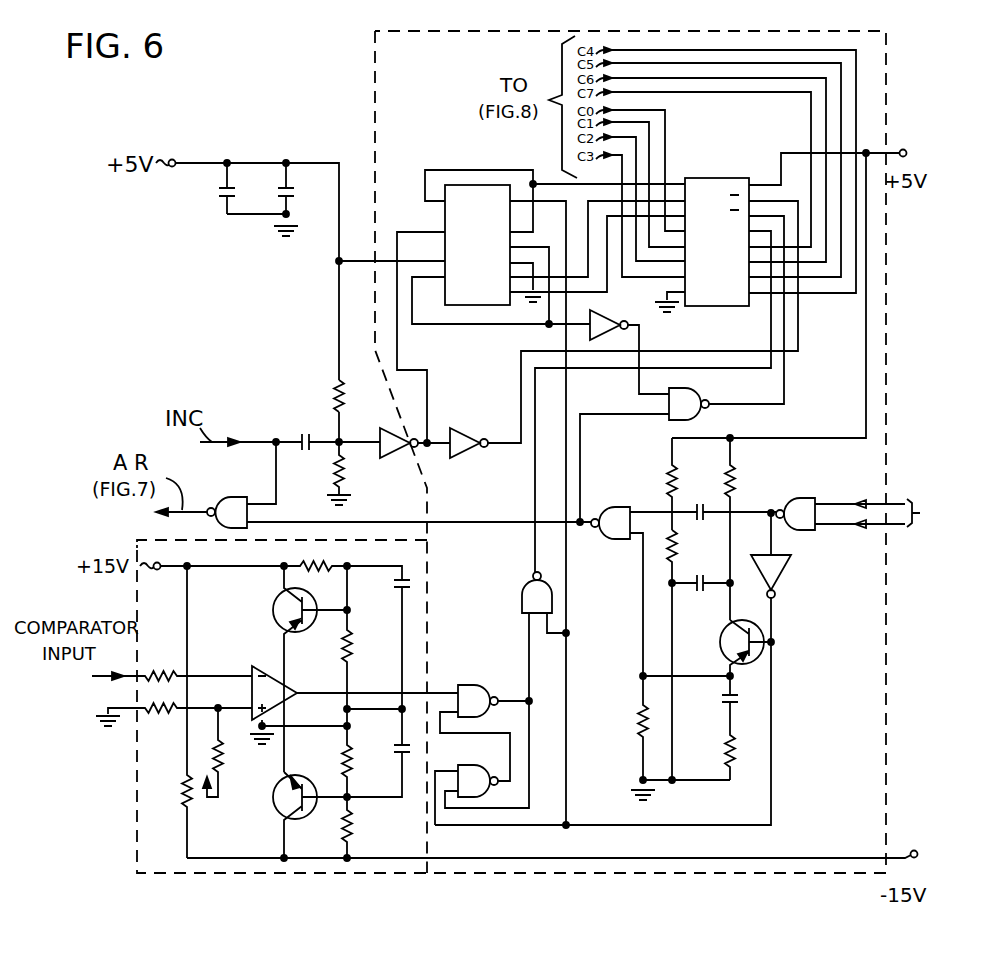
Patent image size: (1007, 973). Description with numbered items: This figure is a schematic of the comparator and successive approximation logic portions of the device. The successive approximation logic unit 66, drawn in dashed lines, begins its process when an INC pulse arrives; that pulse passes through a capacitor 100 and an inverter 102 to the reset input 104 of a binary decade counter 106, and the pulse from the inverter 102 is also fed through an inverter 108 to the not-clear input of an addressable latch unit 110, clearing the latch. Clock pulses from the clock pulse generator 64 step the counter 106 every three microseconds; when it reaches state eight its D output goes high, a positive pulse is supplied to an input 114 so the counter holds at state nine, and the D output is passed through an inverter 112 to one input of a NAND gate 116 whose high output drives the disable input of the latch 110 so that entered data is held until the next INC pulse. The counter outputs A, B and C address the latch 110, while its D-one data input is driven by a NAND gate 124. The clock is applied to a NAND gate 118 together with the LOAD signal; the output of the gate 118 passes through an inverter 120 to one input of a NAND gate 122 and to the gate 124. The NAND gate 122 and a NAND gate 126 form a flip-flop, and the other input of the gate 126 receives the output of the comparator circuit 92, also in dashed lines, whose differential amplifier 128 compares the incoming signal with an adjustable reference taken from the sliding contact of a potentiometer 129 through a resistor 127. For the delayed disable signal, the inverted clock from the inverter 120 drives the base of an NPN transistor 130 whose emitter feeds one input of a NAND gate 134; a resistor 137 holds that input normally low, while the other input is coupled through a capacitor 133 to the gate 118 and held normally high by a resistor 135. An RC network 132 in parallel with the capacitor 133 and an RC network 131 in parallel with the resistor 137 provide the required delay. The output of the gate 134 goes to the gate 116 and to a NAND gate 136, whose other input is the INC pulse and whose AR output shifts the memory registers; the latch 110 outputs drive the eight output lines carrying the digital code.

The successive approximation logic unit 66 is at (847, 31).
The capacitor 100 is at (303, 440).
The inverter 102 is at (394, 458).
The reset input 104 is at (442, 222).
The decade counter 106 is at (478, 306).
The inverter 108 is at (466, 458).
The addressable latch unit 110 is at (735, 306).
The inverter 112 is at (602, 336).
The input 114 is at (440, 290).
The NAND gate 116 is at (700, 390).
The NAND gate 118 is at (818, 480).
The inverter 120 is at (784, 572).
The NAND gate 122 is at (478, 798).
The NAND gate 124 is at (525, 590).
The NAND gate 126 is at (474, 685).
The resistor 127 is at (223, 758).
The differential amplifier 128 is at (257, 666).
The potentiometer 129 is at (190, 800).
The NPN transistor 130 is at (720, 642).
The RC network 131 is at (736, 726).
The RC network 132 is at (665, 556).
The capacitor 133 is at (697, 506).
The NAND gate 134 is at (620, 507).
The resistor 135 is at (662, 480).
The NAND gate 136 is at (224, 497).
The resistor 137 is at (645, 735).
The clock pulse generator 64 is at (920, 516).
The comparator circuit 92 is at (137, 800).